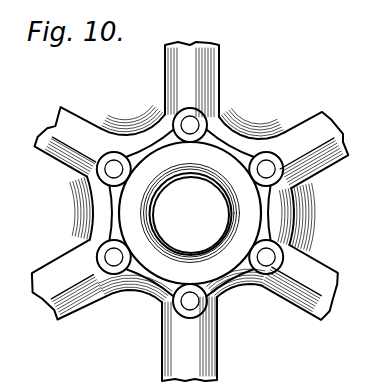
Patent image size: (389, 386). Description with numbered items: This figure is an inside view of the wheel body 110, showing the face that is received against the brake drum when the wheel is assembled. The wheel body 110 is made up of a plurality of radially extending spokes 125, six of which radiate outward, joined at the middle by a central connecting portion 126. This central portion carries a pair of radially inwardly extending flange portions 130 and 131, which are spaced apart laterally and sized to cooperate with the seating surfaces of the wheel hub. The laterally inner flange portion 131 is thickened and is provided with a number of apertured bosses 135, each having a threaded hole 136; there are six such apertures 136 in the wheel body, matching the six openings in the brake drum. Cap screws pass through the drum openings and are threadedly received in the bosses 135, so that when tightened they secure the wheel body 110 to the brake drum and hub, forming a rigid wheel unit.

The wheel body 110 is at (191, 43).
The spokes 125 is at (165, 88).
The central connecting portion 126 is at (100, 213).
The flange portion 130 is at (221, 188).
The laterally inner flange portion 131 is at (155, 282).
The apertured bosses 135 is at (219, 105).
The threaded holes 136 is at (200, 309).